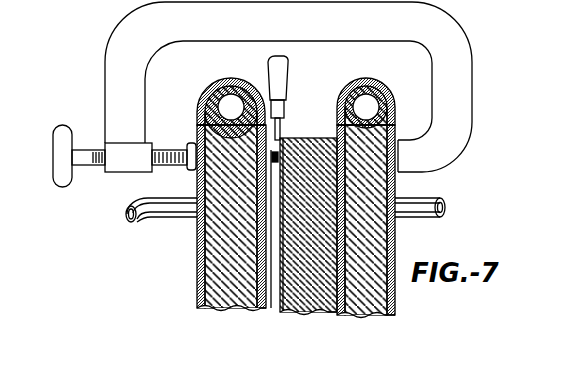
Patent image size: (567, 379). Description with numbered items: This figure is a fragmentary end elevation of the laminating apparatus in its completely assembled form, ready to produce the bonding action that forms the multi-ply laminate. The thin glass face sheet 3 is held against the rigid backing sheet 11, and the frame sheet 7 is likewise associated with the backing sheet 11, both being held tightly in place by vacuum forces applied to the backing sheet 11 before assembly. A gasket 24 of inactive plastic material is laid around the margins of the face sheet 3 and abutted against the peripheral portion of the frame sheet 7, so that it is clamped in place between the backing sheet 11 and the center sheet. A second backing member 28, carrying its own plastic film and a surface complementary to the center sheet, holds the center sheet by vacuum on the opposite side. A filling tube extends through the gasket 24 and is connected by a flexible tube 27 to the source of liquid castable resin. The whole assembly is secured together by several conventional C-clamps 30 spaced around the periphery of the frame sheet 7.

The C-clamp 30 is at (468, 60).
The flexible tube 27 is at (283, 66).
The gasket 24 is at (265, 152).
The frame sheet 7 is at (251, 190).
The face sheet 3 is at (254, 266).
The backing sheet 11 is at (218, 309).
The second backing member 28 is at (376, 315).